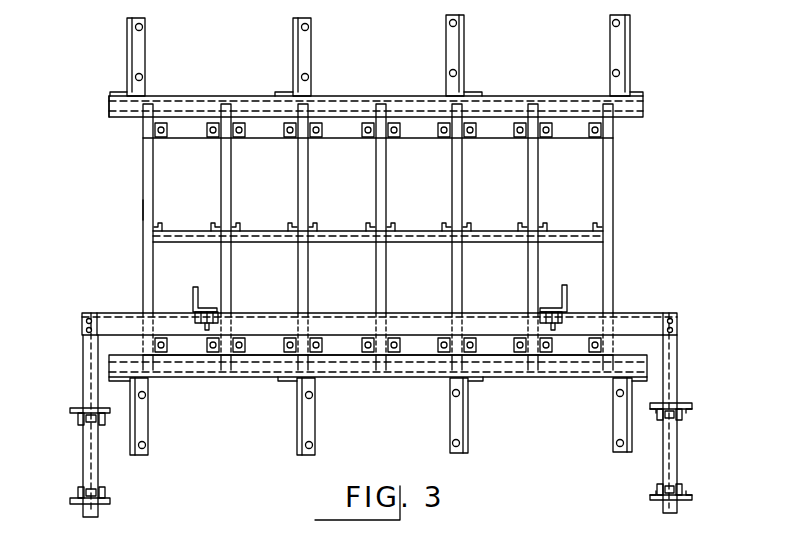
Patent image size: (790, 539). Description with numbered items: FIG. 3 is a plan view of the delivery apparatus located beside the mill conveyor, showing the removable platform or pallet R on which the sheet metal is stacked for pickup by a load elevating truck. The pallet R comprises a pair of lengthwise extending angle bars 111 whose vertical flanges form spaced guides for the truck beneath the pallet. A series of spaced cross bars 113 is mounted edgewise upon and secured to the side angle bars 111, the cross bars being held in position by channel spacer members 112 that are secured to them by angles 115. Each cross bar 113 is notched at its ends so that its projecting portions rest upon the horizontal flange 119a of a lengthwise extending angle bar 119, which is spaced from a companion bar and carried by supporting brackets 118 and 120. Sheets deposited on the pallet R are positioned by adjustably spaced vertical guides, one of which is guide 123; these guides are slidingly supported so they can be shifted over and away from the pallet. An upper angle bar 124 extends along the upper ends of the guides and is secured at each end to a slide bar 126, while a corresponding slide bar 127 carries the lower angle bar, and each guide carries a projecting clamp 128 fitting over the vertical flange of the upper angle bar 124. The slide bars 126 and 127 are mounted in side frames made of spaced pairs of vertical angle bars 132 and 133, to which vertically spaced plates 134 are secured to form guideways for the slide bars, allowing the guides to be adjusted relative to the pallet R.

The lengthwise extending angle bar 111 is at (345, 130).
The channel spacer member 112 is at (270, 217).
The cross bar 113 is at (143, 182).
The angle 115 is at (243, 224).
The supporting bracket 118 is at (127, 45).
The lengthwise extending angle bar 119 is at (189, 96).
The horizontal flange 119a is at (109, 111).
The supporting bracket 120 is at (297, 430).
The vertical guide 123 is at (194, 287).
The upper angle bar 124 is at (115, 313).
The slide bar 126 is at (85, 460).
The slide bar 127 is at (572, 276).
The projecting clamp 128 is at (196, 315).
The vertical angle bar 132 is at (105, 497).
The vertical angle bar 133 is at (70, 410).
The plate 134 is at (685, 404).
The pallet R is at (134, 214).